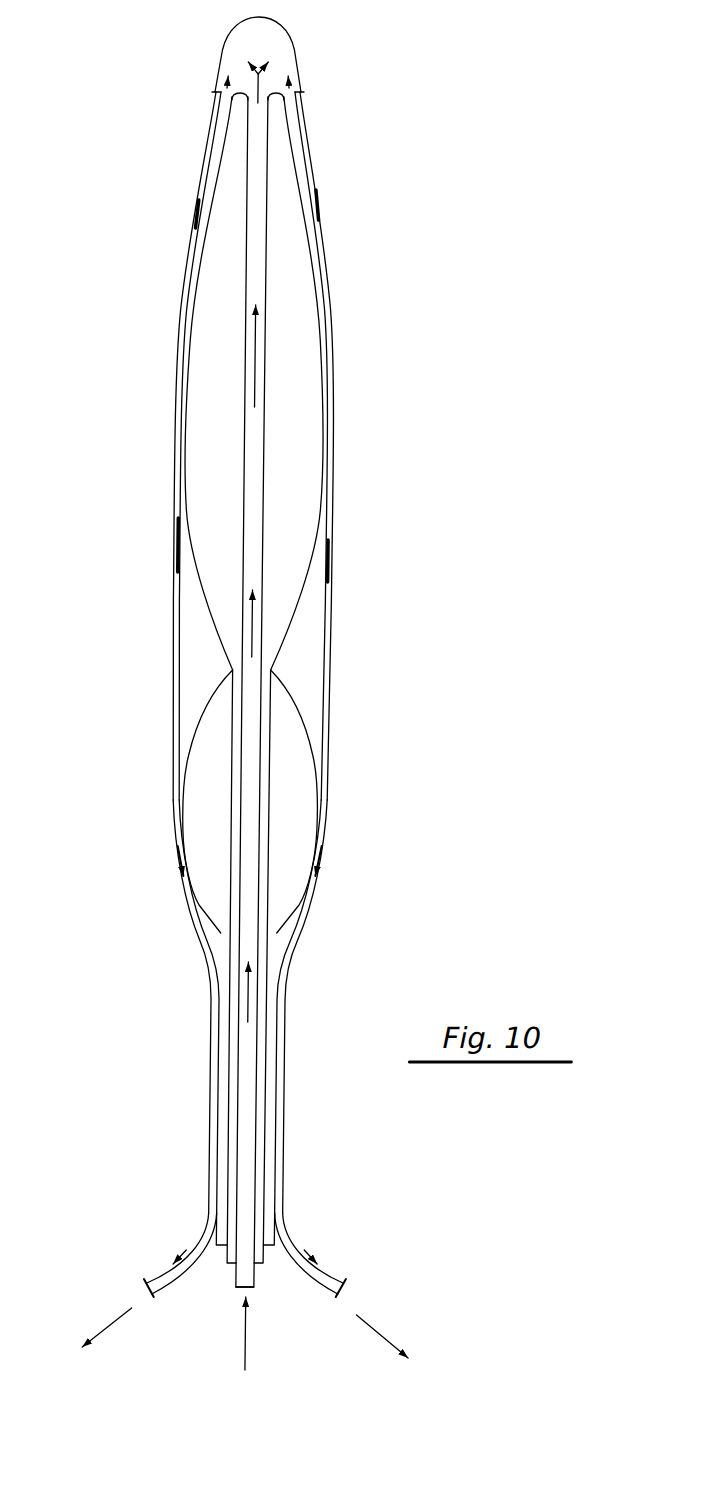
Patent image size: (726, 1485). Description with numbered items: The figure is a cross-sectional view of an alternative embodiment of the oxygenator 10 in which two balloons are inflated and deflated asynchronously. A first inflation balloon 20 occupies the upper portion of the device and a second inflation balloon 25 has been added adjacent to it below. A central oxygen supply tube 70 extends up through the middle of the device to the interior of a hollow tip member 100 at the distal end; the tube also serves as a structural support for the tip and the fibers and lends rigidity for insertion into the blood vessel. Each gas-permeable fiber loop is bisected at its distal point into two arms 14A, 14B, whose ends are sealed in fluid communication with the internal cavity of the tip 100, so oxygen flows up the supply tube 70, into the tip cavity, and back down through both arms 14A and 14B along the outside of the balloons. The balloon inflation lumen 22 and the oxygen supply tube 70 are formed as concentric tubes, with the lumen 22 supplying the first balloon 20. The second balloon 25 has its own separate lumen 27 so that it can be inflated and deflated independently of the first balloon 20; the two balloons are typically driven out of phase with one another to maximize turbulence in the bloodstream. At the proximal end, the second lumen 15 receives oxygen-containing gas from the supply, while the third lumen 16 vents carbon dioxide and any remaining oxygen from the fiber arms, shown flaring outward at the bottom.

The oxygenator 10 is at (130, 465).
The tip member 100 is at (278, 48).
The oxygen supply tube 70 is at (260, 182).
The fiber arm 14A is at (184, 318).
The fiber arm 14B is at (336, 317).
The inflation balloon 20 is at (300, 468).
The balloon inflation lumen 22 is at (240, 777).
The second inflation balloon 25 is at (305, 783).
The separate lumen 27 is at (233, 1009).
The third lumen 16 is at (205, 1252).
The second lumen 15 is at (262, 1277).